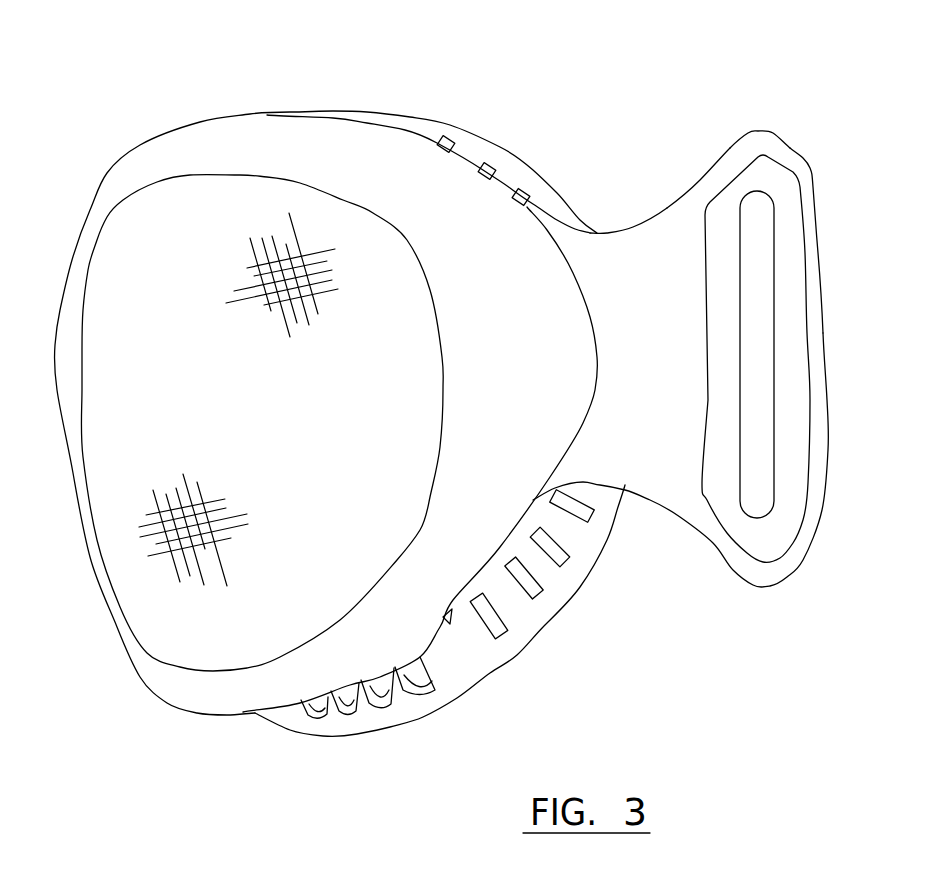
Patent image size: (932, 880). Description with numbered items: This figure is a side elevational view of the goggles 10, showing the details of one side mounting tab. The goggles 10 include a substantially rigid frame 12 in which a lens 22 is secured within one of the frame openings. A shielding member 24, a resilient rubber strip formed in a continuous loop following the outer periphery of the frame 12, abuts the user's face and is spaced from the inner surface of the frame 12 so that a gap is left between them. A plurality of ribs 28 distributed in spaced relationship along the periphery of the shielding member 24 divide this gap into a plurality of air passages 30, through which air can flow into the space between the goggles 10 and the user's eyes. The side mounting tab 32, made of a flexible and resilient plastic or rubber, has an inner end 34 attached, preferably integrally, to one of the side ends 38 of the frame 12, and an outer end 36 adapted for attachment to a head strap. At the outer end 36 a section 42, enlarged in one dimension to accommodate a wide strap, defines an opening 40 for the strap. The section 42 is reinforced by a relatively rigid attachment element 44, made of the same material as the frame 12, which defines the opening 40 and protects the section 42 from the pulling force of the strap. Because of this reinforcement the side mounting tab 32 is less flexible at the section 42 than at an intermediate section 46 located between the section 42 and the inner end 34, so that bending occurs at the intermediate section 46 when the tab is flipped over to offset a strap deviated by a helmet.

The goggles 10 is at (336, 368).
The frame 12 is at (298, 140).
The lens 22 is at (270, 405).
The shielding member 24 is at (478, 660).
The ribs 28 is at (422, 685).
The air passages 30 is at (380, 730).
The side mounting tab 32 is at (685, 326).
The inner end 34 is at (503, 187).
The outer end 36 is at (777, 132).
The side end 38 is at (563, 412).
The opening 40 is at (757, 503).
The section 42 is at (737, 143).
The attachment element 44 is at (805, 415).
The intermediate section 46 is at (637, 227).